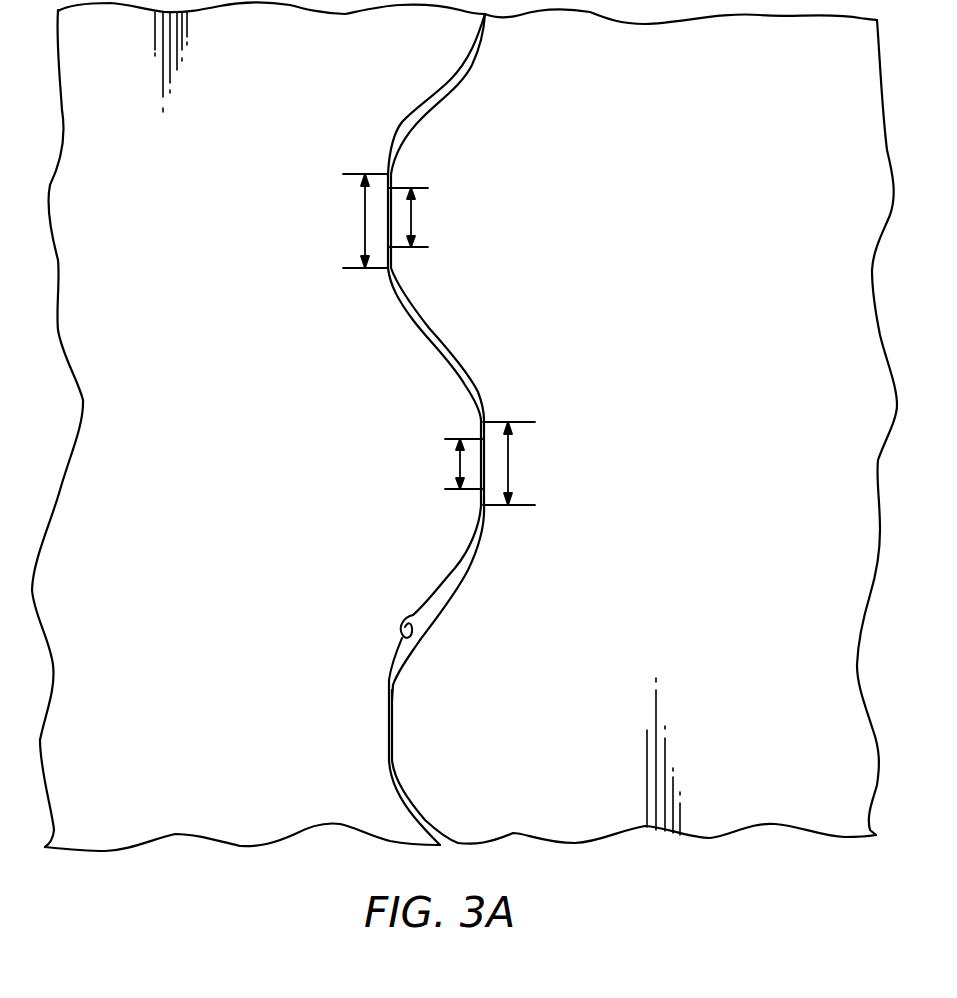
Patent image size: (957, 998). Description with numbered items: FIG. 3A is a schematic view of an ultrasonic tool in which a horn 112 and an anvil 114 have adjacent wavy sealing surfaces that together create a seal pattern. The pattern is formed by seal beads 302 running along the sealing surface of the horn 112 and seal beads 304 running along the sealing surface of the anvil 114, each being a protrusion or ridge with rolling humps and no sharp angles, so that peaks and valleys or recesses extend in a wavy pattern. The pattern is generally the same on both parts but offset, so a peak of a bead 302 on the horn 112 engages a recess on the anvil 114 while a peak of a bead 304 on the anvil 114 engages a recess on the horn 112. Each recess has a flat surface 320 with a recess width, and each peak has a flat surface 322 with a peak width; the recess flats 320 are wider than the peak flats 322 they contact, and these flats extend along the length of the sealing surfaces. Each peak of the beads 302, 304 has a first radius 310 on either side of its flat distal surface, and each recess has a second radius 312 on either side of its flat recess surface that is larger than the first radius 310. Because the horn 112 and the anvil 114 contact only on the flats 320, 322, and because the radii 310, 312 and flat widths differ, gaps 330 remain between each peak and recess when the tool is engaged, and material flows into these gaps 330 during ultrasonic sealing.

The horn 112 is at (178, 378).
The anvil 114 is at (700, 338).
The seal bead 302 is at (430, 531).
The seal bead 304 is at (485, 239).
The first radius 310 is at (408, 630).
The second radius 312 is at (410, 612).
The flat surface of recess 320 is at (363, 213).
The flat surface of peak 322 is at (413, 217).
The gap 330 is at (443, 350).